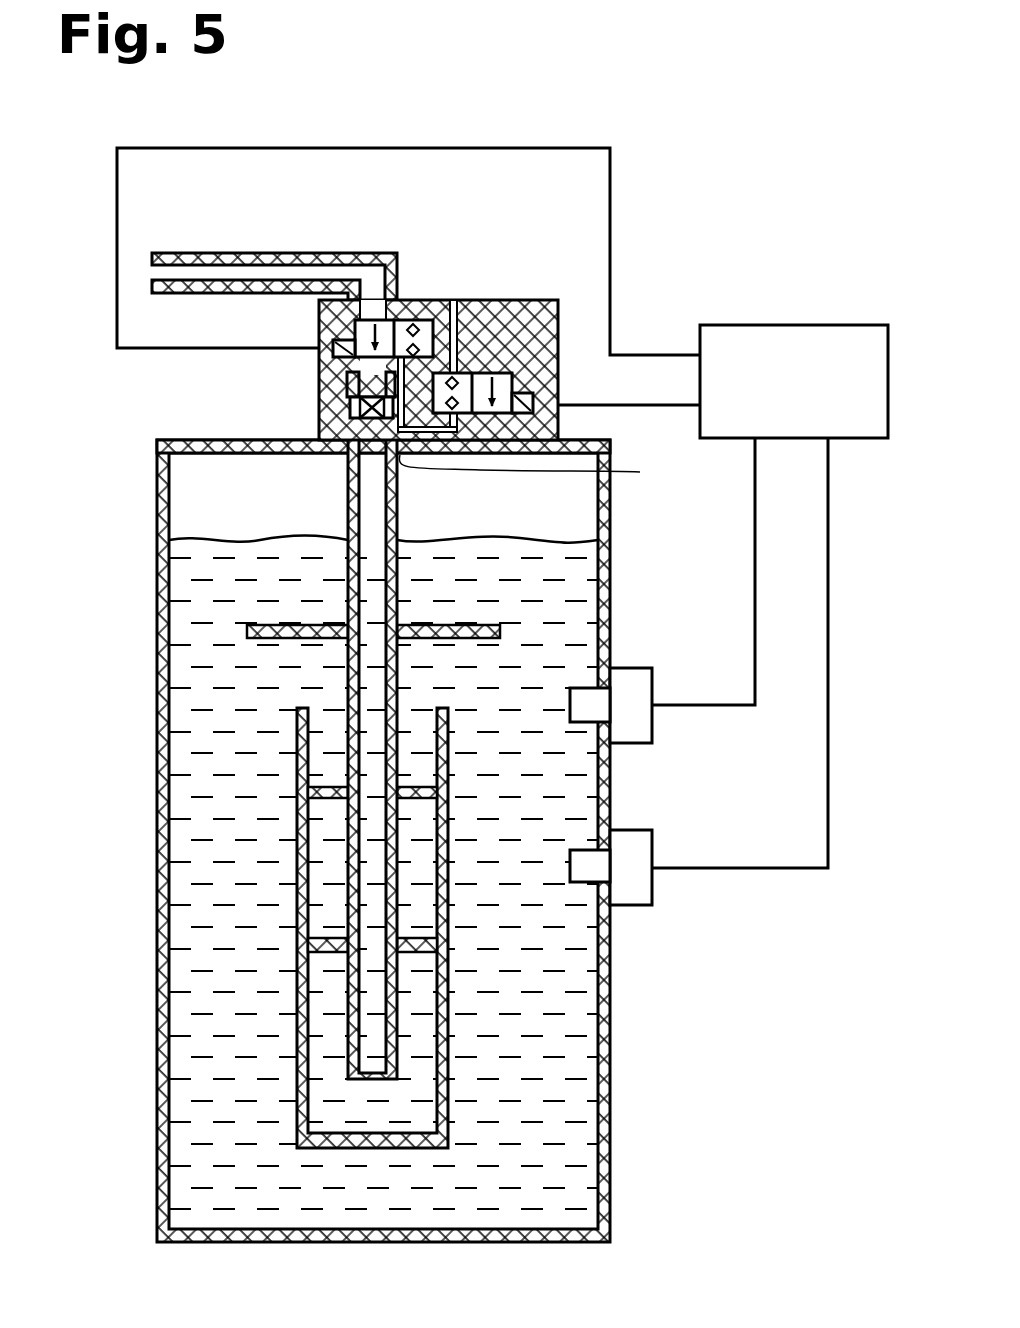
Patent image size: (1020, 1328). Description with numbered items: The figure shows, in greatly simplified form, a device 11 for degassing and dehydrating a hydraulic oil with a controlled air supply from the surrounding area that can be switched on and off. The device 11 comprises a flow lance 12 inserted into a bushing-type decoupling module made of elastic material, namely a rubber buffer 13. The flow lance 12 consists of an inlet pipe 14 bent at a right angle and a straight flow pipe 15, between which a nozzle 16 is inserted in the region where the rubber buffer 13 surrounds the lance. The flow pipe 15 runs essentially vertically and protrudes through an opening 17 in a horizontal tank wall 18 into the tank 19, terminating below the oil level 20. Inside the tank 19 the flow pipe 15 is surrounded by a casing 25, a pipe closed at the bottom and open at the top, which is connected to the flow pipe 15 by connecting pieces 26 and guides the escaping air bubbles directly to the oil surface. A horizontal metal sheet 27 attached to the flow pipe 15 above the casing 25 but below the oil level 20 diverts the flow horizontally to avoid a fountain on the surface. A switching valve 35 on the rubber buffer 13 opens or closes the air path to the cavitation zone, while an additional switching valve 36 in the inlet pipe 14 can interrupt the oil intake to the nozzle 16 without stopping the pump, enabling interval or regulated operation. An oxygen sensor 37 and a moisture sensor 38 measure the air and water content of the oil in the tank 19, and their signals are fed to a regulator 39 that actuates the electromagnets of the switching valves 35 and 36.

The device 11 is at (690, 188).
The flow lance 12 is at (318, 508).
The rubber buffer 13 is at (328, 382).
The inlet pipe 14 is at (258, 253).
The flow pipe 15 is at (392, 1000).
The nozzle 16 is at (350, 410).
The opening 17 is at (537, 471).
The tank wall 18 is at (578, 443).
The tank 19 is at (632, 612).
The oil level 20 is at (530, 540).
The casing 25 is at (440, 1053).
The connecting pieces 26 is at (327, 938).
The metal sheet 27 is at (252, 632).
The switching valve 35 is at (500, 380).
The switching valve 36 is at (404, 318).
The oxygen sensor 37 is at (632, 732).
The moisture sensor 38 is at (625, 848).
The regulator 39 is at (818, 348).